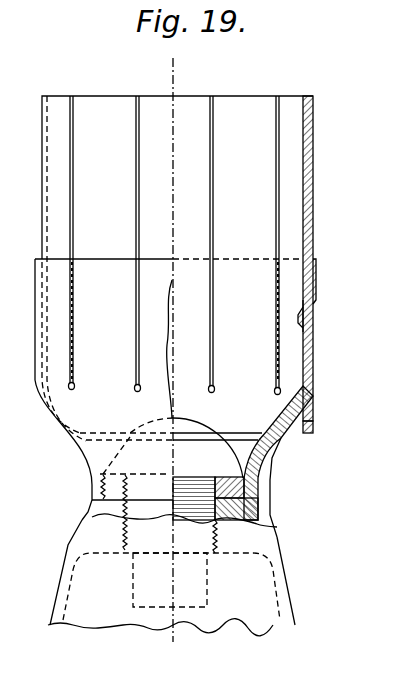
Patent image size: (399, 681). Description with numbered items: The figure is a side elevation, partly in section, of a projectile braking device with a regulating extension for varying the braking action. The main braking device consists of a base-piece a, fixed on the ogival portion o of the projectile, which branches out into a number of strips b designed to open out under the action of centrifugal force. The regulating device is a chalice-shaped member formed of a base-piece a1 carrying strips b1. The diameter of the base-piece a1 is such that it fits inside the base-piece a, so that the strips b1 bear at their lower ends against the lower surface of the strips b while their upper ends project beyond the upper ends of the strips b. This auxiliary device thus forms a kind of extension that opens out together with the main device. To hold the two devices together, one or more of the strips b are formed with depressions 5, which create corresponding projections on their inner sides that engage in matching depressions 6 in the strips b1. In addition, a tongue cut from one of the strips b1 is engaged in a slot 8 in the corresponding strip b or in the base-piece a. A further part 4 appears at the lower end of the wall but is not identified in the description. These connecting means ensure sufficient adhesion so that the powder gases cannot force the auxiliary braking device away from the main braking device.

The strips of auxiliary braking device b1 is at (234, 108).
The strips b is at (56, 269).
The slot 8 is at (314, 391).
The wall end ring 4 is at (313, 426).
The depressions 5 is at (306, 320).
The depressions 6 is at (300, 320).
The base-piece of auxiliary braking device a1 is at (263, 415).
The base-piece a is at (256, 488).
The ogival portion o is at (266, 546).